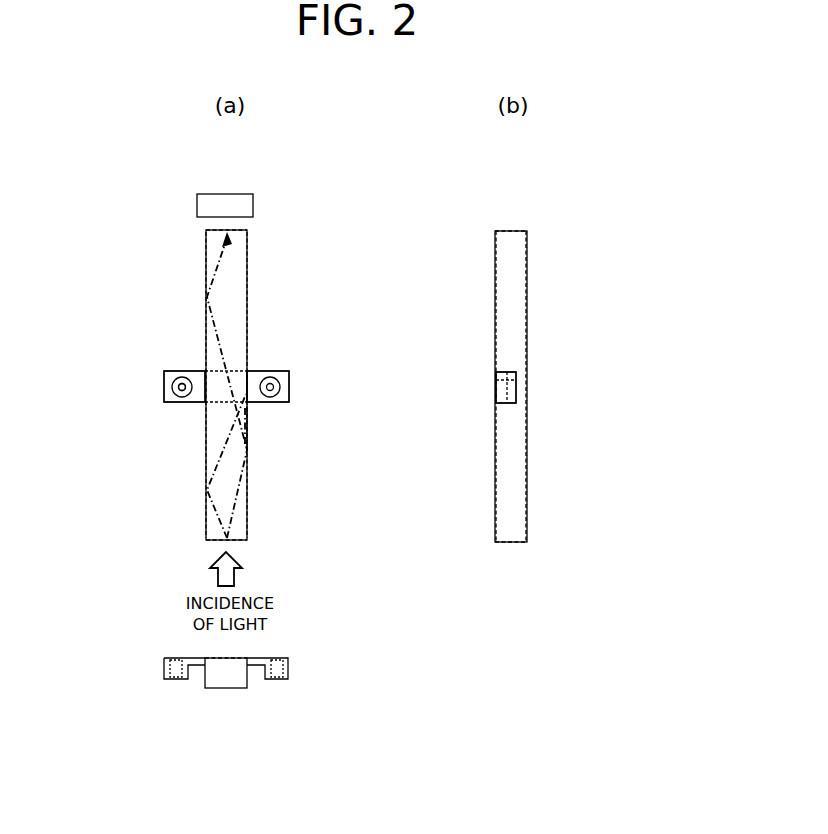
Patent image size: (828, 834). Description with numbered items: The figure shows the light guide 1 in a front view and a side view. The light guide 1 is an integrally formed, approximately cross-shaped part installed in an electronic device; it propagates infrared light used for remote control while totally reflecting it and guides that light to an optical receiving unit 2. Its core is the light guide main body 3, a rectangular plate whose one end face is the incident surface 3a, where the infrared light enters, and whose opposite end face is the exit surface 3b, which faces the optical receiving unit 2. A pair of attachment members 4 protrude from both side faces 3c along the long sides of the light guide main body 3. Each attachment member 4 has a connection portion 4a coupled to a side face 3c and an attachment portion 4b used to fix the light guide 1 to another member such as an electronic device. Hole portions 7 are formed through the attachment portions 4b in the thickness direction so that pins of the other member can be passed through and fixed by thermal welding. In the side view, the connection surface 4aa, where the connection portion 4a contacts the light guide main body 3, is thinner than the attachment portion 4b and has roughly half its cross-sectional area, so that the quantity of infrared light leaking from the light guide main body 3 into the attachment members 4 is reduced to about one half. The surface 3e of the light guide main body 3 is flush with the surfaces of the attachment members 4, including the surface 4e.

The light guide 1 is at (138, 198).
The optical receiving unit 2 is at (230, 204).
The light guide main body 3 is at (205, 485).
The incident surface 3a is at (237, 542).
The exit surface 3b is at (240, 230).
The side faces 3c is at (205, 520).
The surface 3e is at (233, 470).
The attachment members 4 is at (185, 310).
The connection portions 4a is at (197, 378).
The connection surfaces 4aa is at (500, 380).
The attachment portions 4b is at (167, 388).
The surface 4e is at (258, 402).
The hole portions 7 is at (180, 390).